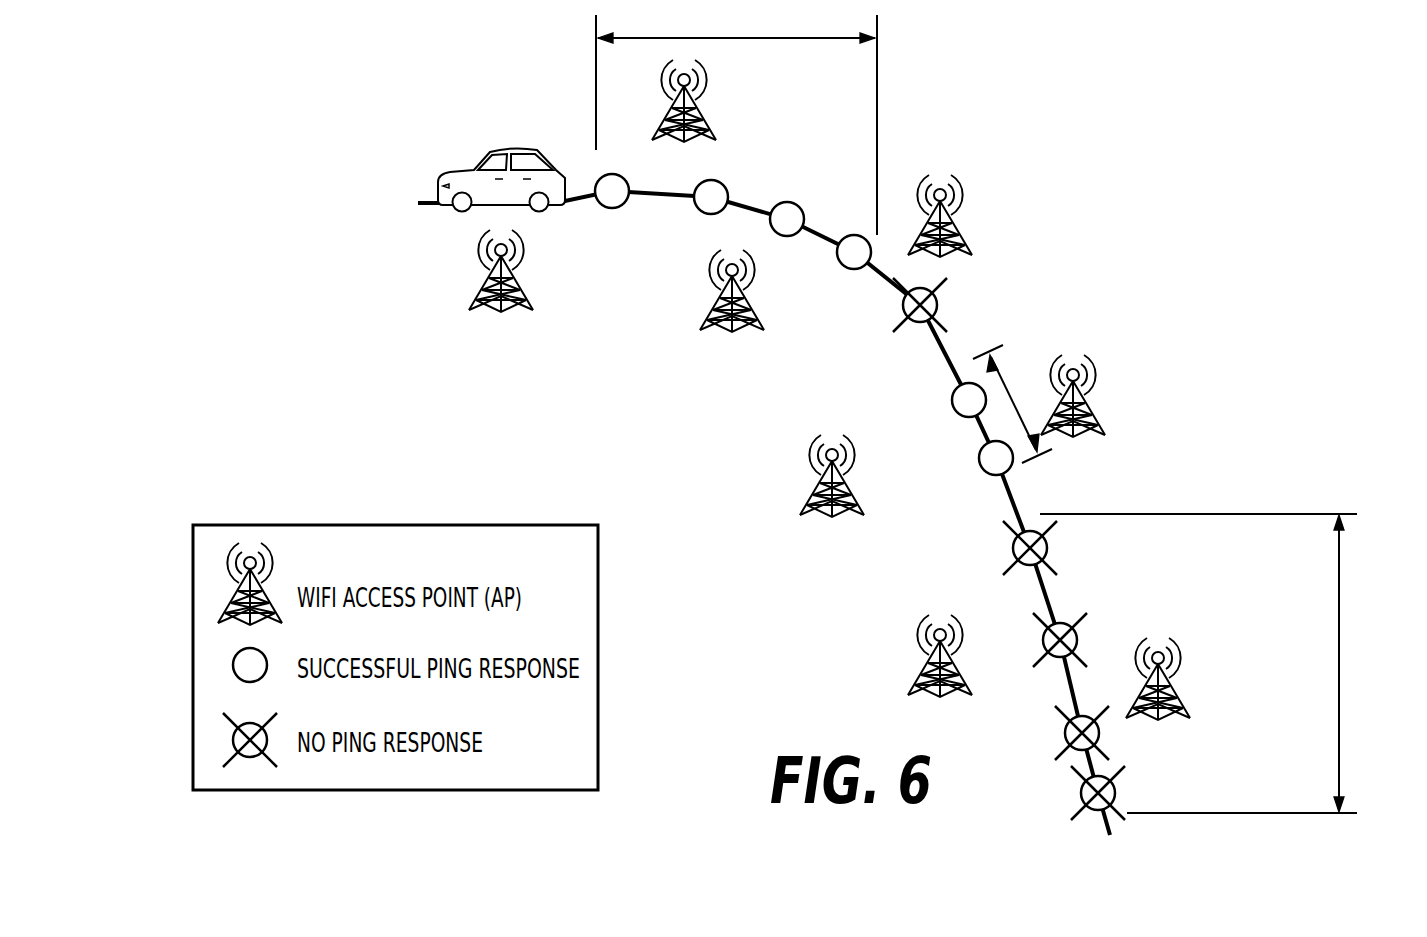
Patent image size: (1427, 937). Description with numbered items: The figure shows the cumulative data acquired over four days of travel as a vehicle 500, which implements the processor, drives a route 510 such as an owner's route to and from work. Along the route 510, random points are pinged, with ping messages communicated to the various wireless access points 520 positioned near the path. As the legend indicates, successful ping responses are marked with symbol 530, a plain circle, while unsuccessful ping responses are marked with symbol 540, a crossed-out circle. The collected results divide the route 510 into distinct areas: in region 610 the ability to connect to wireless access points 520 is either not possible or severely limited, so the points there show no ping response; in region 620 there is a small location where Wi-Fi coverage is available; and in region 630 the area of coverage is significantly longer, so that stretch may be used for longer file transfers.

The vehicle 500 is at (515, 150).
The route 510 is at (420, 203).
The wireless access points 520 is at (232, 600).
The successful ping response symbol 530 is at (232, 665).
The unsuccessful ping response symbol 540 is at (232, 738).
The region of limited connectivity 610 is at (1338, 613).
The region of small Wi-Fi coverage 620 is at (1011, 392).
The region of long coverage 630 is at (740, 40).